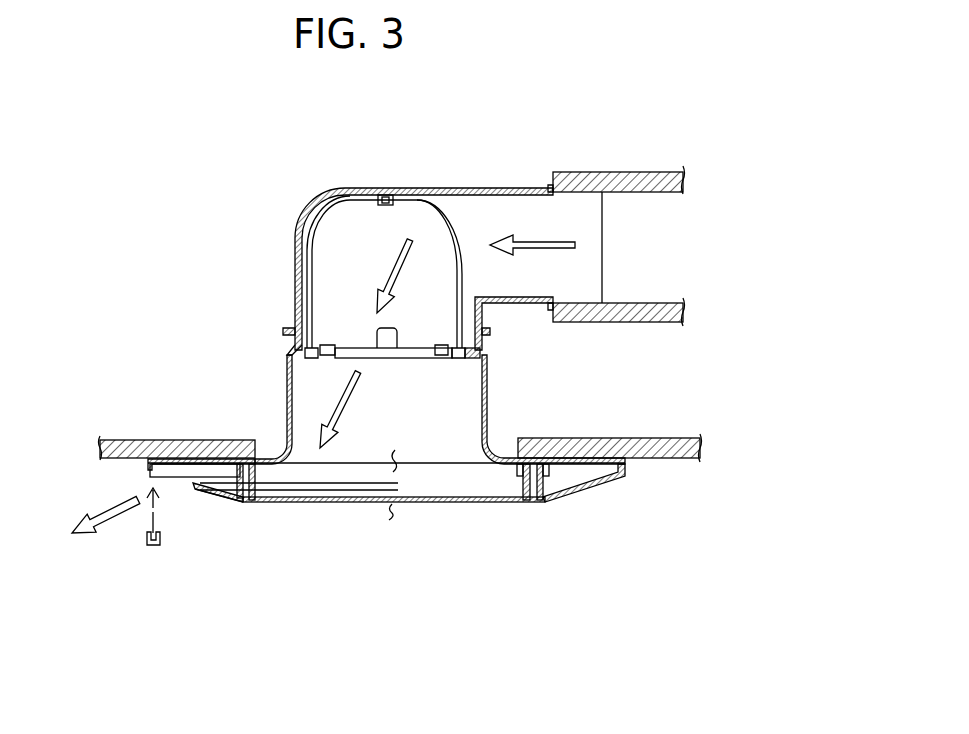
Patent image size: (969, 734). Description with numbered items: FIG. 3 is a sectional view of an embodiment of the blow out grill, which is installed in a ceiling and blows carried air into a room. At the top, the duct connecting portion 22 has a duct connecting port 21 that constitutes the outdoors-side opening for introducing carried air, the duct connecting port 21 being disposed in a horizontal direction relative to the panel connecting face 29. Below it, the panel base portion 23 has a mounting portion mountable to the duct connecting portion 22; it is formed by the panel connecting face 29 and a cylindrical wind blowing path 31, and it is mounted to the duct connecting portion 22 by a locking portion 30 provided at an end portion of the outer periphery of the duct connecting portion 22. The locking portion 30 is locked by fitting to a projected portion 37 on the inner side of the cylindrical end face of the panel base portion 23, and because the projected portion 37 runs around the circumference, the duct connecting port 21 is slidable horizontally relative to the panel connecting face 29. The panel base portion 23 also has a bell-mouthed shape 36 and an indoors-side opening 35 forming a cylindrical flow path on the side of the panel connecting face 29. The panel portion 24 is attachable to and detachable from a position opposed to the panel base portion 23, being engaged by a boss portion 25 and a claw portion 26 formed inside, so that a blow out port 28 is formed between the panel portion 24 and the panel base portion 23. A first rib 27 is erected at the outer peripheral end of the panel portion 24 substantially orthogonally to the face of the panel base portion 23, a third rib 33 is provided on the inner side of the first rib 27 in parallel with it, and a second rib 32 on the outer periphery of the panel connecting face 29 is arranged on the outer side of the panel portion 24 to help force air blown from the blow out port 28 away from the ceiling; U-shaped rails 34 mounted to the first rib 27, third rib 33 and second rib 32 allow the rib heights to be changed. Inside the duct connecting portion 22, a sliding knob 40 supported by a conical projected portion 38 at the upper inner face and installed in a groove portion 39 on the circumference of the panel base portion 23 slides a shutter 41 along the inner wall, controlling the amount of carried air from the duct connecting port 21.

The duct connecting port 21 is at (485, 188).
The duct connecting portion 22 is at (308, 227).
The panel base portion 23 is at (487, 428).
The panel portion 24 is at (485, 503).
The boss portion 25 is at (257, 503).
The claw portion 26 is at (233, 462).
The first rib 27 is at (192, 488).
The blow out port 28 is at (178, 485).
The panel connecting face 29 is at (580, 464).
The locking portion 30 is at (485, 352).
The wind blowing path 31 is at (455, 405).
The second rib 32 is at (147, 473).
The third rib 33 is at (197, 493).
The rails 34 is at (148, 540).
The indoors-side opening 35 is at (313, 463).
The bell-mouthed shape 36 is at (250, 470).
The projected portion 37 is at (490, 333).
The projected portion 38 is at (390, 188).
The groove portion 39 is at (284, 330).
The sliding knob 40 is at (386, 328).
The shutter 41 is at (300, 268).